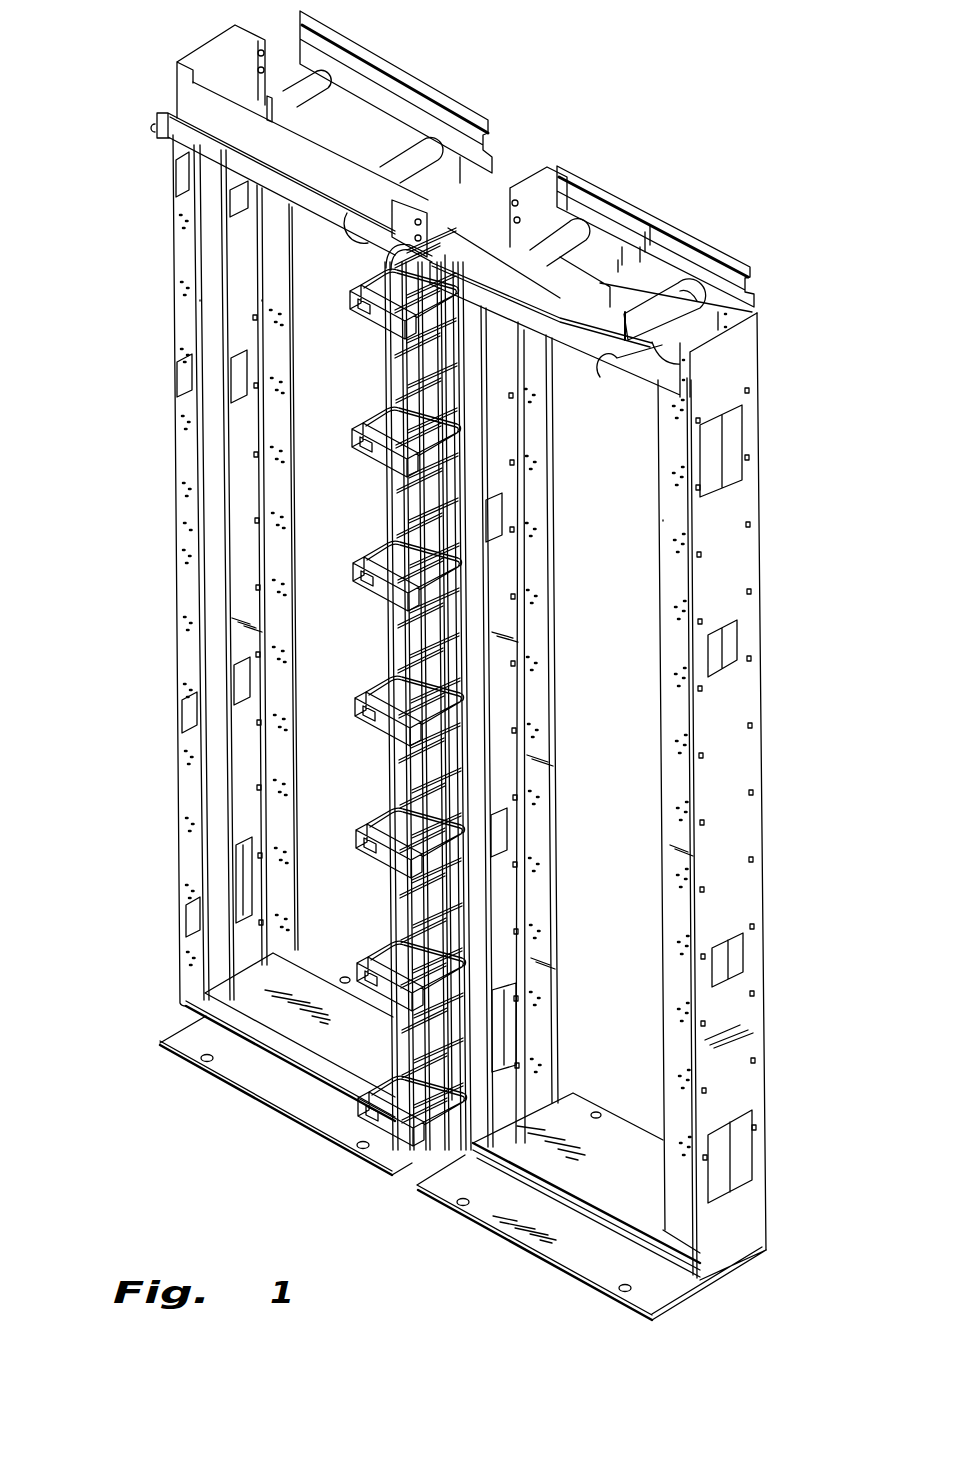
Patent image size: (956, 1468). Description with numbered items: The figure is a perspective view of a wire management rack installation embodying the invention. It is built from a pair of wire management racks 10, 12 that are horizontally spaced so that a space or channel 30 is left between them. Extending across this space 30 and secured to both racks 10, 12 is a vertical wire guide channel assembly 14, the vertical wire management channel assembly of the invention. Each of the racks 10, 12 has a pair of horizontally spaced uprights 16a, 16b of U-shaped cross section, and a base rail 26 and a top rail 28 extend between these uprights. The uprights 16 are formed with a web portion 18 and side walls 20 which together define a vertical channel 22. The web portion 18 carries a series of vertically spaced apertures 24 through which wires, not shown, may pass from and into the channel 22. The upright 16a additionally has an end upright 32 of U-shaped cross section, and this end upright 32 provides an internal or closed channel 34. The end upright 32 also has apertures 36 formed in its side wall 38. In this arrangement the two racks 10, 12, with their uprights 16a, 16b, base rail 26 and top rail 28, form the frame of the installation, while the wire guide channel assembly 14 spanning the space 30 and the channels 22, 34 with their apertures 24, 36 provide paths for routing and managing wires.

The wire management rack 10 is at (464, 665).
The wire management rack 12 is at (614, 717).
The vertical wire guide channel assembly 14 is at (371, 672).
The uprights 16 is at (464, 665).
The upright 16a is at (188, 786).
The upright 16b is at (430, 1040).
The web portion 18 is at (755, 700).
The side walls 20 is at (190, 447).
The vertical channel 22 is at (246, 284).
The apertures 24 is at (497, 833).
The base rail 26 is at (617, 1163).
The top rail 28 is at (627, 293).
The space or channel 30 is at (487, 178).
The end upright 32 is at (186, 80).
The internal or closed channel 34 is at (197, 62).
The apertures 36 is at (185, 374).
The side wall 38 is at (180, 524).